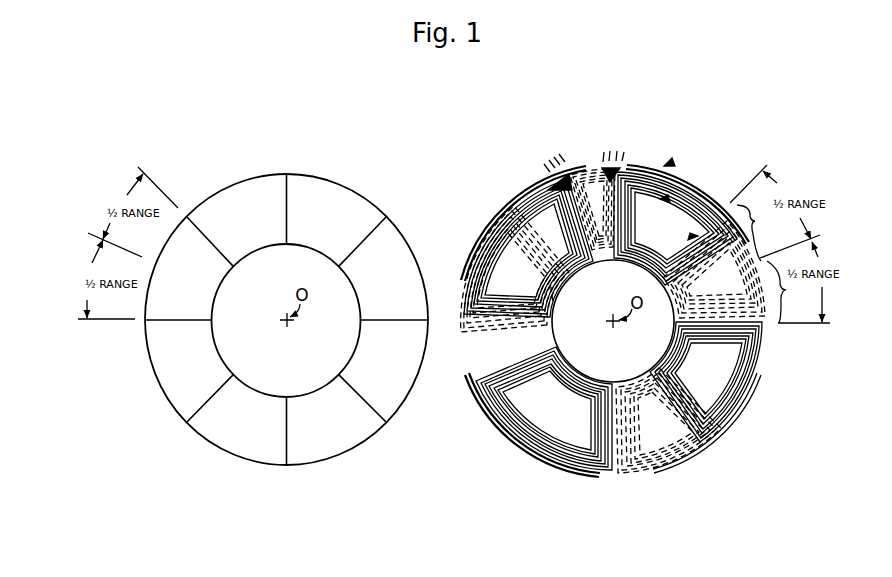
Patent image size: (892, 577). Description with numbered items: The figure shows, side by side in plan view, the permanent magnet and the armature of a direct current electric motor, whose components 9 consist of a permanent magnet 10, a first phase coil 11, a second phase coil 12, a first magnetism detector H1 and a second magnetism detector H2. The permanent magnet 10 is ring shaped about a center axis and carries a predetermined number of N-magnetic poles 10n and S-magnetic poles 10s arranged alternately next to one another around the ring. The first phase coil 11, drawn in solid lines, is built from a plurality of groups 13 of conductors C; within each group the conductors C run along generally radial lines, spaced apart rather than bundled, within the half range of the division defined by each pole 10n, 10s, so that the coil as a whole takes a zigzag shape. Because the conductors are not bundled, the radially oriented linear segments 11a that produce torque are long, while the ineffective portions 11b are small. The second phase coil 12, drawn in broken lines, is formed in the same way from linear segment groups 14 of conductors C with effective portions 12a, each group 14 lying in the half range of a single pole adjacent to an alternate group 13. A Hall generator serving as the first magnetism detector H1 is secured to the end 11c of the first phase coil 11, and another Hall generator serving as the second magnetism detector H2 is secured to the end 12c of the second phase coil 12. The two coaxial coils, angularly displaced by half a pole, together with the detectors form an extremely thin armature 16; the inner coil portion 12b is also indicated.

The components of direct current electric motor 9 is at (230, 162).
The permanent magnet 10 is at (303, 172).
The N-magnetic pole 10n is at (369, 197).
The S-magnetic pole 10s is at (403, 238).
The first phase coil 11 is at (691, 191).
The linear segments of conductors of first phase coil 11a is at (518, 203).
The ineffective portions of conductors of first phase coil 11b is at (583, 267).
The end of first phase coil 11c is at (613, 162).
The second phase coil 12 is at (721, 206).
The effective linear segment conductor portions of second phase coil 12a is at (503, 272).
The inner peripheral portion of second coil 12b is at (560, 293).
The end of second phase coil 12c is at (573, 173).
The groups of conductors 13 is at (757, 233).
The linear segment groups of conductors 14 is at (785, 292).
The armature 16 is at (690, 145).
The first magnetism detector H1 is at (625, 168).
The second magnetism detector H2 is at (550, 180).
The conductors C is at (590, 167).